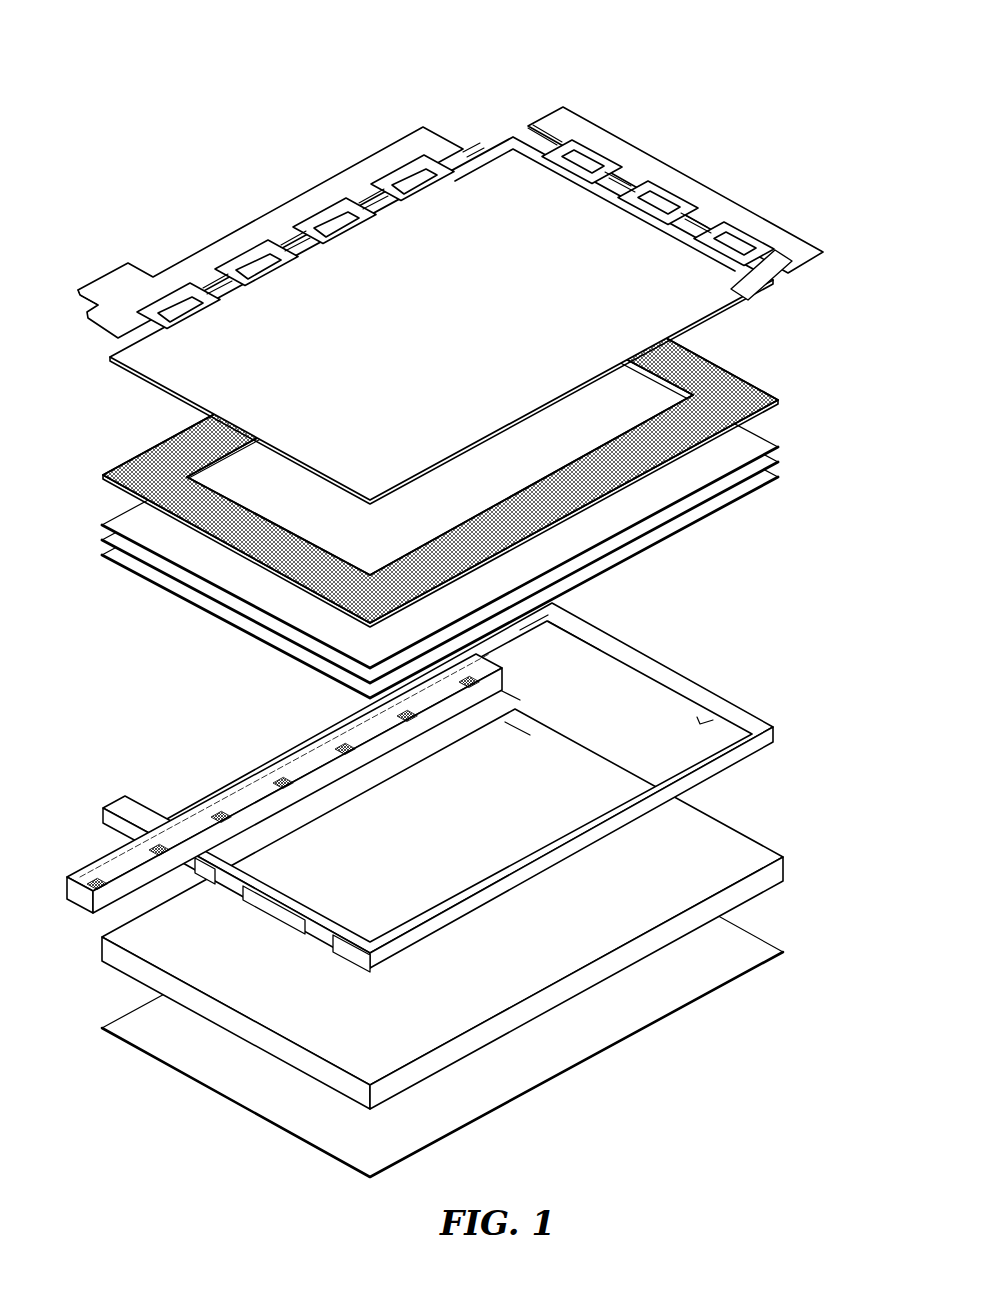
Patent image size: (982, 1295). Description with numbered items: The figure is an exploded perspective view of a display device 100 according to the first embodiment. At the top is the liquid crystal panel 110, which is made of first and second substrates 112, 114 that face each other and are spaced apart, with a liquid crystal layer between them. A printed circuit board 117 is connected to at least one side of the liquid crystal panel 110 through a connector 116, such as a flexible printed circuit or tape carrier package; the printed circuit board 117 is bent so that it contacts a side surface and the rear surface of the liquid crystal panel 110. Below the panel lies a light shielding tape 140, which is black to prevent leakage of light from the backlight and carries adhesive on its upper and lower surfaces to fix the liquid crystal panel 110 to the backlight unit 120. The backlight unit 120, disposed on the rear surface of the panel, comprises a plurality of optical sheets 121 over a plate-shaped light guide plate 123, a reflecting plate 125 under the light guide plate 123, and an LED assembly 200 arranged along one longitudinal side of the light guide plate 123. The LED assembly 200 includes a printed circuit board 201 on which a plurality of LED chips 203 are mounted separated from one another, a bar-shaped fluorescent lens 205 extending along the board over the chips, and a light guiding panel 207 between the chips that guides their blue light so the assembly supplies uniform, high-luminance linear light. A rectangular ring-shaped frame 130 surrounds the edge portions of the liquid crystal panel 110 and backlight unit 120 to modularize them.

The display device 100 is at (489, 595).
The liquid crystal panel 110 is at (501, 292).
The first substrate 112 is at (790, 270).
The second substrate 114 is at (737, 287).
The connector 116 is at (550, 157).
The printed circuit board 117 is at (378, 160).
The backlight unit 120 is at (489, 740).
The optical sheets 121 is at (472, 501).
The light guide plate 123 is at (784, 866).
The reflecting plate 125 is at (796, 951).
The frame 130 is at (125, 811).
The light shielding tape 140 is at (713, 387).
The LED assembly 200 is at (490, 781).
The printed circuit board 201 is at (482, 663).
The LED chips 203 is at (490, 690).
The fluorescent lens 205 is at (505, 722).
The light guiding panel 207 is at (500, 706).